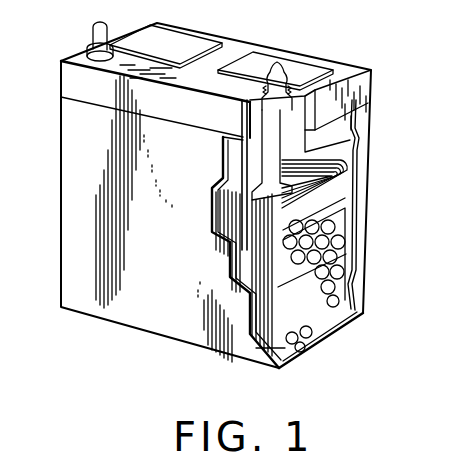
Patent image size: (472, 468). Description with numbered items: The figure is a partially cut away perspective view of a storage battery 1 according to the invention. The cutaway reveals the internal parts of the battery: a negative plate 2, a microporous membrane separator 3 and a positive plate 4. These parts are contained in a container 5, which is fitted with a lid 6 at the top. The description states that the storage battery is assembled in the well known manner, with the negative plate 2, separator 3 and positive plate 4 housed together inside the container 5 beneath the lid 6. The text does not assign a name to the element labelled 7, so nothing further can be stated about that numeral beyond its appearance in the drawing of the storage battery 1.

The storage battery 1 is at (368, 113).
The negative plate 2 is at (300, 322).
The microporous membrane separator 3 is at (346, 271).
The positive plate 4 is at (350, 186).
The container 5 is at (72, 218).
The lid 6 is at (77, 90).
The terminal post and plate strap 7 is at (281, 209).